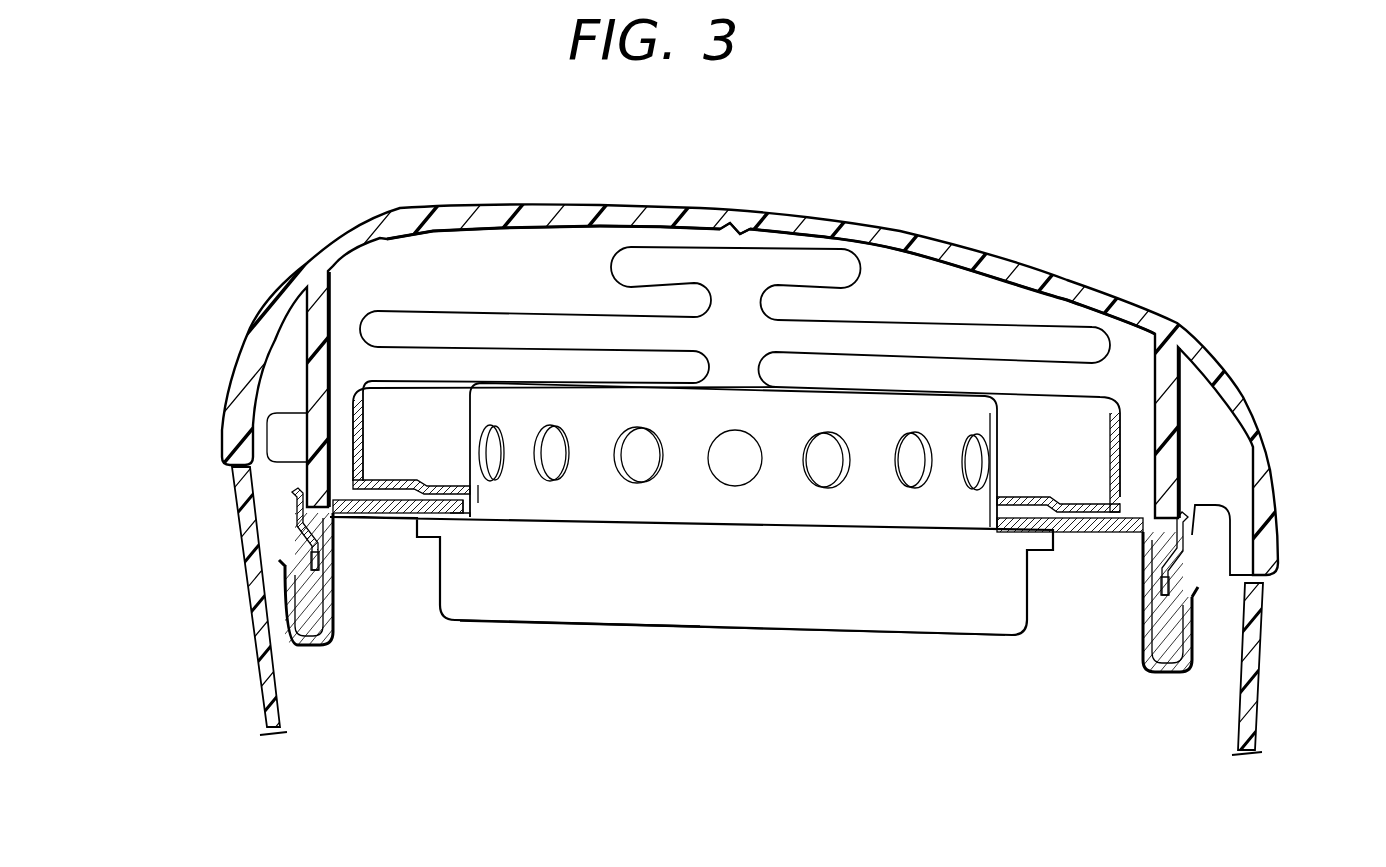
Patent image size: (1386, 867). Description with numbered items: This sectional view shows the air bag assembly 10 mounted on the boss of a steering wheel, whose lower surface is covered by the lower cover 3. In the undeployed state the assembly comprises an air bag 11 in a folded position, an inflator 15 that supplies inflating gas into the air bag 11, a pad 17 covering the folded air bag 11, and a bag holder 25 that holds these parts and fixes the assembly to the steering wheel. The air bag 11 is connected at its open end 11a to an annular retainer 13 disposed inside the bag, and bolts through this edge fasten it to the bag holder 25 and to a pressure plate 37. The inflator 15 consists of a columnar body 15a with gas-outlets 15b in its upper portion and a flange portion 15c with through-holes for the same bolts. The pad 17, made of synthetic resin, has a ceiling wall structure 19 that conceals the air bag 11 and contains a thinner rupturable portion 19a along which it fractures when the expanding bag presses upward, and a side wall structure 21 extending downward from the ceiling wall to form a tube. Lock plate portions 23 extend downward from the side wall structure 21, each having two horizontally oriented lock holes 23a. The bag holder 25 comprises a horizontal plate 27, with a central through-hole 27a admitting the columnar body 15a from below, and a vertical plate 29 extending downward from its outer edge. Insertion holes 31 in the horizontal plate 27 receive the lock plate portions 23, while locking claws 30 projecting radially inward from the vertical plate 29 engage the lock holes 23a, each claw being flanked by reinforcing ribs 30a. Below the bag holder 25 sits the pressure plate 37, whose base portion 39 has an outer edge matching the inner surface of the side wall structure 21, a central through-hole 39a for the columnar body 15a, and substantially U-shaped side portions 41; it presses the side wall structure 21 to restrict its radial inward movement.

The lower cover 3 is at (1253, 690).
The air bag assembly 10 is at (646, 694).
The air bag 11 is at (613, 262).
The open end 11a is at (1005, 492).
The annular retainer 13 is at (1122, 472).
The inflator 15 is at (748, 634).
The columnar body 15a is at (873, 615).
The gas-outlets 15b is at (634, 458).
The flange portion 15c is at (1040, 545).
The pad 17 is at (914, 228).
The ceiling wall structure 19 is at (815, 233).
The rupturable portion 19a is at (730, 227).
The side wall structure 21 is at (262, 478).
The lock plate portions 23 is at (313, 623).
The lock holes 23a is at (320, 529).
The bag holder 25 is at (1128, 505).
The horizontal plate 27 is at (398, 503).
The through-hole 27a is at (452, 519).
The vertical plate 29 is at (1205, 506).
The locking claws 30 is at (297, 541).
The reinforcing ribs 30a is at (303, 558).
The insertion holes 31 is at (315, 476).
The pressure plate 37 is at (344, 648).
The base portion 39 is at (1093, 532).
The through-hole 39a is at (463, 514).
The U-shaped side portions 41 is at (1150, 665).